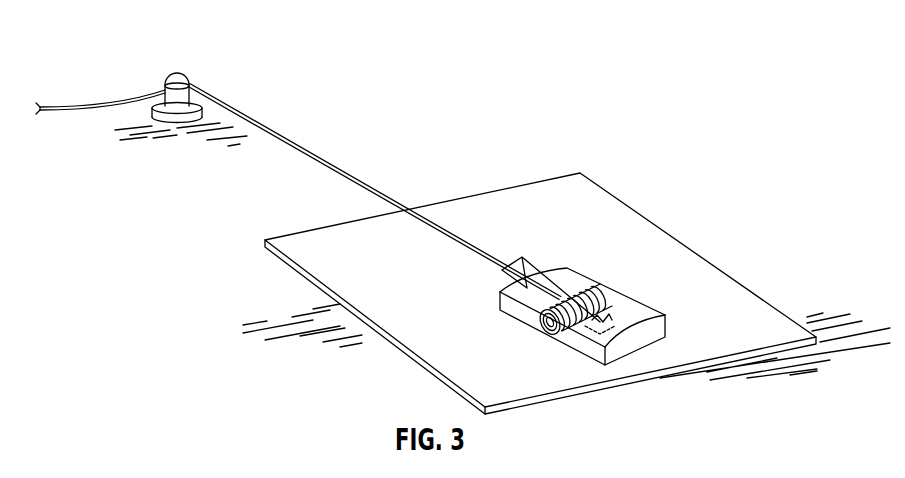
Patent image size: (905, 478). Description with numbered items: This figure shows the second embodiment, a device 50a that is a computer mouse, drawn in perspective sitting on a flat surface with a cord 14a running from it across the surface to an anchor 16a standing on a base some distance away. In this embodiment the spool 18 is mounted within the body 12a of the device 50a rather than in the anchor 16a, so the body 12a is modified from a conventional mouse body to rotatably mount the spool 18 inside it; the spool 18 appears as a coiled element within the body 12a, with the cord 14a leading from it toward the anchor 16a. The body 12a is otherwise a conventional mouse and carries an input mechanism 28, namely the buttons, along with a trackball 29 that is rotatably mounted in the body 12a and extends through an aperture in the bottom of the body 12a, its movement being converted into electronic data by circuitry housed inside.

The device 50a is at (375, 90).
The anchor 16a is at (168, 74).
The line / rope 14a is at (56, 111).
The body 12a is at (547, 270).
The input mechanism 28 is at (515, 265).
The spool 18 is at (597, 298).
The trackball 29 is at (585, 328).